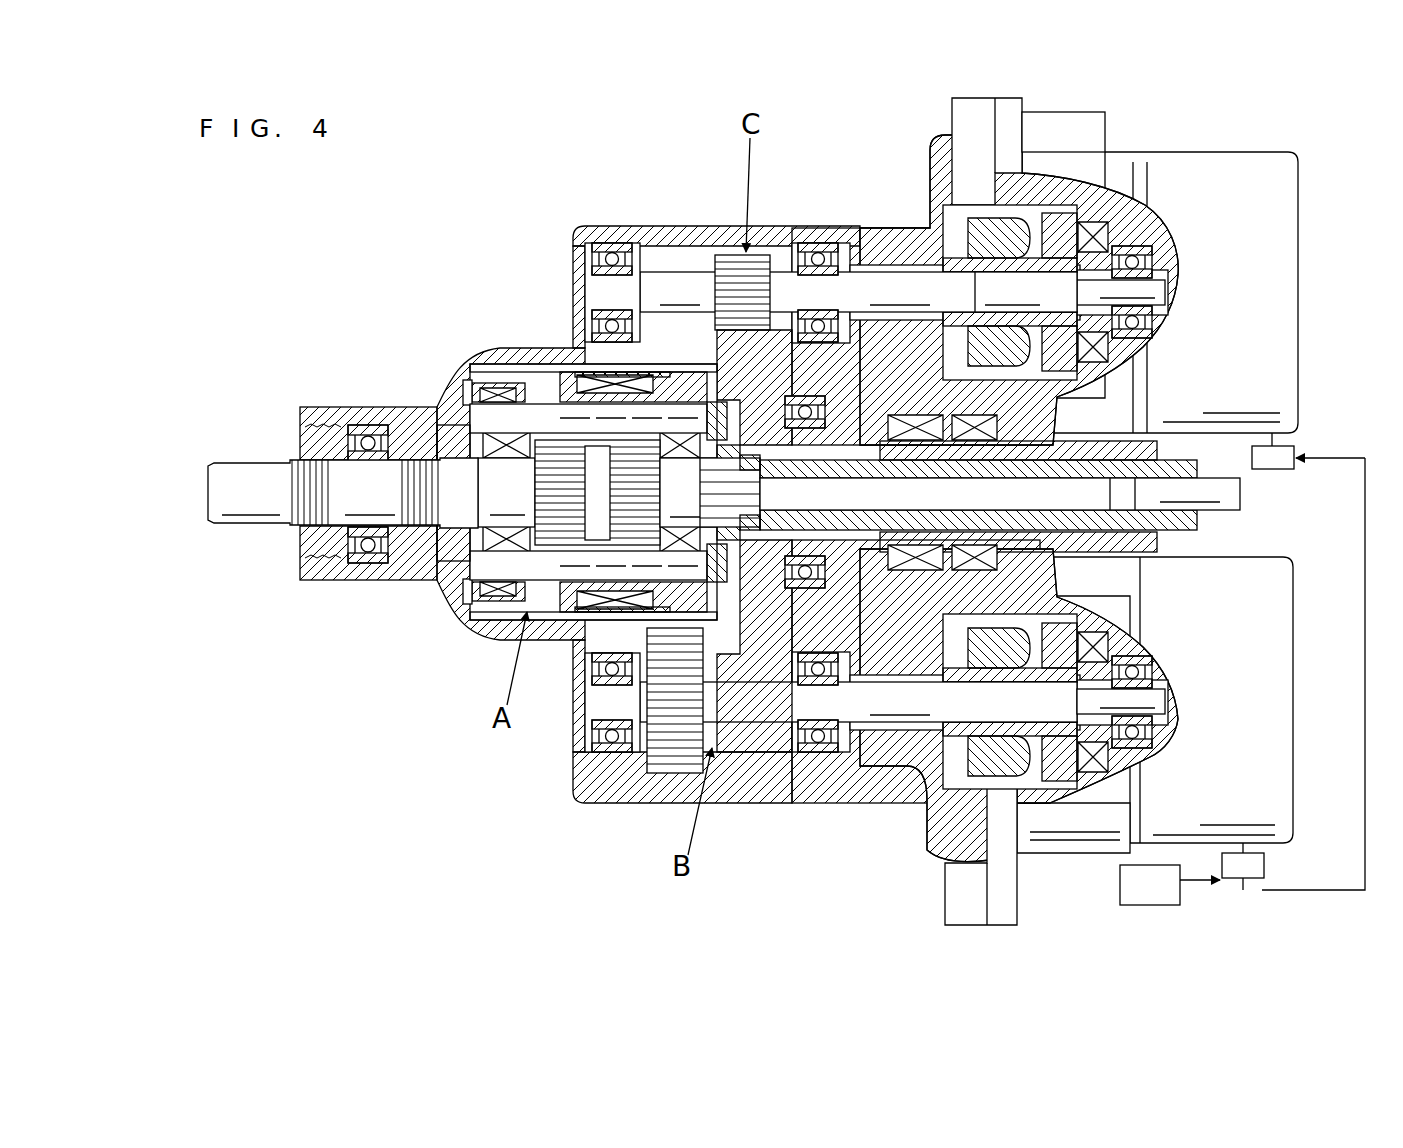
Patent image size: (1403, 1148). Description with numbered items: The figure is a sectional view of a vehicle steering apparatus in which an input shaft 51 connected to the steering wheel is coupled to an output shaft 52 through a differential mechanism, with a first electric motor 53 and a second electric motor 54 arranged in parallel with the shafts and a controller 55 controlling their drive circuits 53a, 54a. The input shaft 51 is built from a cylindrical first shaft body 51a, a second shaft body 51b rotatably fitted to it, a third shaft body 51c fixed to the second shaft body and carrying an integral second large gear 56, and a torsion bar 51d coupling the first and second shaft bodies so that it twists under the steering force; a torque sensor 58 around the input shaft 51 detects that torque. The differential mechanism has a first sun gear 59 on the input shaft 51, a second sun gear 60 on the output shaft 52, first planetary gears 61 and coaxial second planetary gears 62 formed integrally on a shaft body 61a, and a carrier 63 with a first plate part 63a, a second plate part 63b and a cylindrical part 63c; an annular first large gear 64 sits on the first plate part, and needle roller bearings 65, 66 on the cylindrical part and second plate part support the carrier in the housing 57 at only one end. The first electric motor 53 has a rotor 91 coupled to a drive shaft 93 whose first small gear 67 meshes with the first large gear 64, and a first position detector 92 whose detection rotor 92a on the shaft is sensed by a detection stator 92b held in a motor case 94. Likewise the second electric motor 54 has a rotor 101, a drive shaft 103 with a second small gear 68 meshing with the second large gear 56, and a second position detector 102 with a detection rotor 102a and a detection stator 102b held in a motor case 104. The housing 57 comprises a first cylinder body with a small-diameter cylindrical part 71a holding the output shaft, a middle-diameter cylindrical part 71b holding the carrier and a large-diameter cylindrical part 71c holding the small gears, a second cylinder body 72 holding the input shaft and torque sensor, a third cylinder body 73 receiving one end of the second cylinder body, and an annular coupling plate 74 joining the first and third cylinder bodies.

The input shaft 51 is at (1195, 540).
The first shaft body 51a is at (1200, 518).
The second shaft body 51b is at (730, 530).
The third shaft body 51c is at (752, 535).
The torsion bar 51d is at (1232, 492).
The output shaft 52 is at (460, 518).
The first electric motor 53 is at (1293, 800).
The drive circuit 53a is at (1247, 880).
The second electric motor 54 is at (1262, 160).
The drive circuit 54a is at (1300, 452).
The controller 55 is at (1145, 907).
The second large gear 56 is at (778, 335).
The housing 57 is at (500, 365).
The torque sensor 58 is at (770, 660).
The first sun gear 59 is at (660, 506).
The second sun gear 60 is at (540, 404).
The first planetary gears 61 is at (650, 365).
The shaft body 61a is at (490, 608).
The second planetary gears 62 is at (552, 372).
The carrier 63 is at (655, 440).
The first plate part 63a is at (655, 778).
The second plate part 63b is at (480, 600).
The cylindrical part 63c is at (628, 372).
The first large gear 64 is at (728, 590).
The needle roller bearing 65 is at (568, 372).
The needle roller bearing 66 is at (466, 378).
The first small gear 67 is at (672, 760).
The second small gear 68 is at (760, 258).
The small-diameter cylindrical part 71a is at (372, 407).
The middle-diameter cylindrical part 71b is at (447, 352).
The large-diameter cylindrical part 71c is at (608, 228).
The second cylinder body 72 is at (1160, 452).
The third cylinder body 73 is at (937, 150).
The coupling plate 74 is at (822, 228).
The rotor 91 is at (1157, 737).
The first position detector 92 is at (975, 790).
The detection rotor 92a is at (903, 590).
The detection stator 92b is at (1045, 795).
The drive shaft 93 is at (852, 724).
The motor case 94 is at (1122, 768).
The rotor 101 is at (1134, 244).
The second position detector 102 is at (960, 212).
The detection rotor 102a is at (965, 280).
The detection stator 102b is at (980, 212).
The drive shaft 103 is at (885, 275).
The motor case 104 is at (1092, 220).